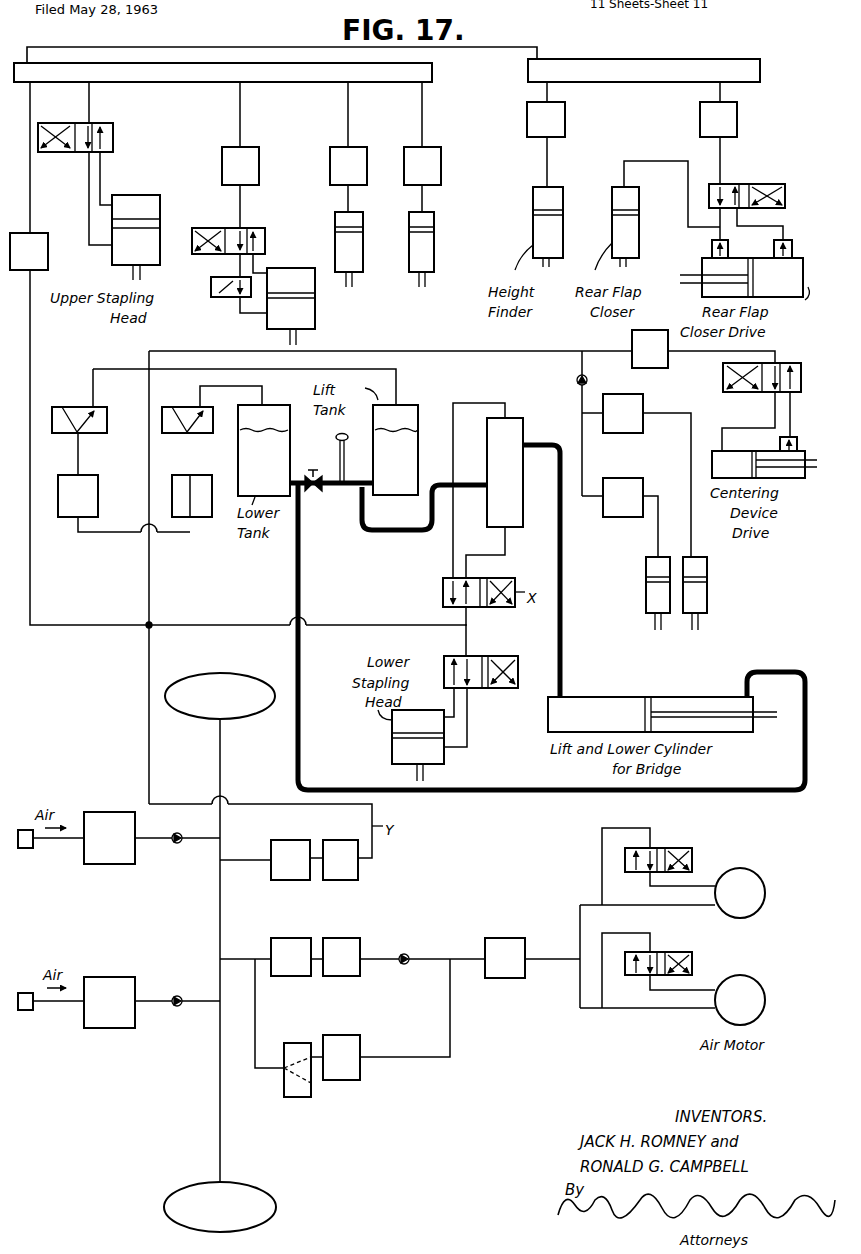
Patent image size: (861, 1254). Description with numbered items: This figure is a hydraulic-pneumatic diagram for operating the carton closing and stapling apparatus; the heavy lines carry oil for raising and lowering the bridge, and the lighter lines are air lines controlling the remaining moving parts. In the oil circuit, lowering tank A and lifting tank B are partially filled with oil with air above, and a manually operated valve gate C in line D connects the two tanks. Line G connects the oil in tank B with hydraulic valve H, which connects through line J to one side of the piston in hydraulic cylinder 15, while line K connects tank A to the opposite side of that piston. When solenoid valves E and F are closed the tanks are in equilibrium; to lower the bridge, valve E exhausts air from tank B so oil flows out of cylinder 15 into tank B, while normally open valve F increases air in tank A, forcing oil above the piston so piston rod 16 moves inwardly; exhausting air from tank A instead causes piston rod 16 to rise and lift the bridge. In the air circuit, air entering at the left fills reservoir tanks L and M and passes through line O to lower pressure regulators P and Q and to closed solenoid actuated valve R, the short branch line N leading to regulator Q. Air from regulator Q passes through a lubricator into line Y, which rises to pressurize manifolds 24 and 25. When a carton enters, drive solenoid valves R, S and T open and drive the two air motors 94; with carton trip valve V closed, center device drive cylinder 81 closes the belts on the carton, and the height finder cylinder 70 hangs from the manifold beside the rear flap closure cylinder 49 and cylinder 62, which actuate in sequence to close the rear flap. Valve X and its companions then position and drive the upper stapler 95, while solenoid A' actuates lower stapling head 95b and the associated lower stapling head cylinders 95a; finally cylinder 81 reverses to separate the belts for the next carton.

The manifold 24 is at (645, 82).
The manifold 25 is at (181, 82).
The upper stapler 95 is at (130, 195).
The lower stapling head cylinder 95a is at (392, 750).
The lower stapling head 95b is at (316, 312).
The height finder cylinder 70 is at (563, 210).
The rear flap closure cylinder 49 is at (639, 210).
The cylinder 62 is at (770, 257).
The center device drive cylinder 81 is at (740, 474).
The hydraulic cylinder 15 is at (592, 697).
The piston rod 16 is at (766, 712).
The air motor 94 is at (740, 946).
The valve X is at (88, 163).
The solenoid valve E is at (82, 435).
The solenoid valve F is at (192, 435).
The lowering tank A is at (264, 450).
The lifting tank B is at (395, 450).
The manually operated valve gate C is at (313, 471).
The line D is at (352, 480).
The line G is at (380, 535).
The hydraulic valve H is at (505, 472).
The line K is at (305, 563).
The line J is at (566, 592).
The line Y is at (465, 642).
The solenoid A' is at (482, 662).
The reservoir tank L is at (220, 696).
The line N is at (240, 860).
The pressure regulator Q is at (290, 860).
The line O is at (243, 962).
The pressure regulator P is at (291, 957).
The solenoid actuated valve R is at (297, 1098).
The reservoir tank M is at (220, 1207).
The drive solenoid valve S is at (688, 848).
The drive solenoid valve T is at (688, 952).
The carton trip valve V is at (723, 377).